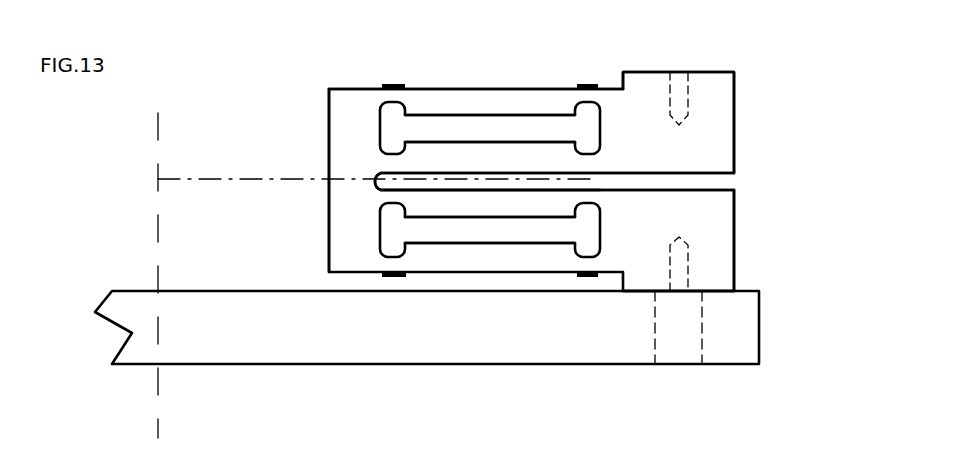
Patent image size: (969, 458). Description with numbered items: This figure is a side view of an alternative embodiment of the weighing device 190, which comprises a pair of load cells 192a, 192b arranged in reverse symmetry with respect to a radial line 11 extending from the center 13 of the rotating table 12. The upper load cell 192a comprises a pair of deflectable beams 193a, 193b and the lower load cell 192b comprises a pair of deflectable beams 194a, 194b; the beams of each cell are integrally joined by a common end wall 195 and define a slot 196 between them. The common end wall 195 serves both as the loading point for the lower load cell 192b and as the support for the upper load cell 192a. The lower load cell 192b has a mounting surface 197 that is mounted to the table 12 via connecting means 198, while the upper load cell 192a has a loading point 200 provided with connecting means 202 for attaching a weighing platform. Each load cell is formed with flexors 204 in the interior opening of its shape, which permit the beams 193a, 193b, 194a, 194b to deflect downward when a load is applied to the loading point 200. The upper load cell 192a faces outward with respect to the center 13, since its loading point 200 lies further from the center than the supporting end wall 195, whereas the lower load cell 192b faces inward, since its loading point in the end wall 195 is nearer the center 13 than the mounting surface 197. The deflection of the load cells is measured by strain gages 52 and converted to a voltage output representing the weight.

The radial line 11 is at (205, 177).
The rotating table 12 is at (750, 330).
The center 13 is at (157, 222).
The strain gages 52 is at (393, 84).
The weighing device 190 is at (766, 101).
The upper load cell 192a is at (473, 82).
The lower load cell 192b is at (430, 191).
The deflectable beam 193a is at (507, 102).
The deflectable beam 193b is at (453, 157).
The deflectable beam 194a is at (493, 203).
The deflectable beam 194b is at (430, 255).
The common end wall 195 is at (350, 125).
The slot 196 is at (735, 182).
The mounting surface 197 is at (722, 291).
The connecting means 198 is at (681, 262).
The loading point 200 is at (727, 72).
The connecting means 202 is at (677, 72).
The flexors 204 is at (378, 113).